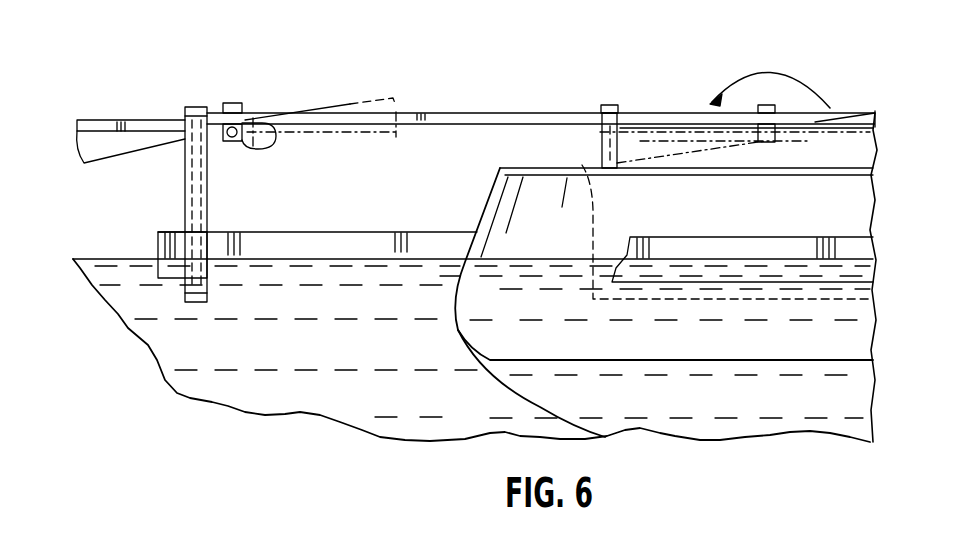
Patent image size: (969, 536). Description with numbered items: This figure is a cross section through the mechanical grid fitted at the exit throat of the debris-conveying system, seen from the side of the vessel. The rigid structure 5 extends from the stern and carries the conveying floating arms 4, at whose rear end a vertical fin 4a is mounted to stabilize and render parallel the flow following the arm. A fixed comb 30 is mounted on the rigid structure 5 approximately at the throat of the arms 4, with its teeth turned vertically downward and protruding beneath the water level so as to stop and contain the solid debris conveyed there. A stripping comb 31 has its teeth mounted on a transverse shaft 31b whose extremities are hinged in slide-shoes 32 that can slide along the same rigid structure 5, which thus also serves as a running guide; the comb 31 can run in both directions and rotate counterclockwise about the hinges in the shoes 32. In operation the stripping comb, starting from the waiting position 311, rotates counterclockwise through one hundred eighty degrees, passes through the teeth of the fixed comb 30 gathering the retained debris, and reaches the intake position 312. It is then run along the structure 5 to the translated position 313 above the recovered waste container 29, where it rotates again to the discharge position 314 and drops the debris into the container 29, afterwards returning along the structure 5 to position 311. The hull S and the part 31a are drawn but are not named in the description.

The ship S is at (557, 252).
The conveying floating arm 4 is at (345, 240).
The vertical fin 4a is at (158, 237).
The rigid structure 5 is at (470, 113).
The recovered waste container 29 is at (582, 165).
The fixed comb 30 is at (178, 190).
The stripping comb 31 is at (149, 116).
The waiting position 311 is at (80, 114).
The intake position 312 is at (345, 100).
The translated position 313 is at (840, 108).
The discharge position 314 is at (665, 108).
The rail segment part 31a is at (162, 127).
The transverse shaft 31b is at (260, 128).
The slide-shoe 32 is at (238, 104).